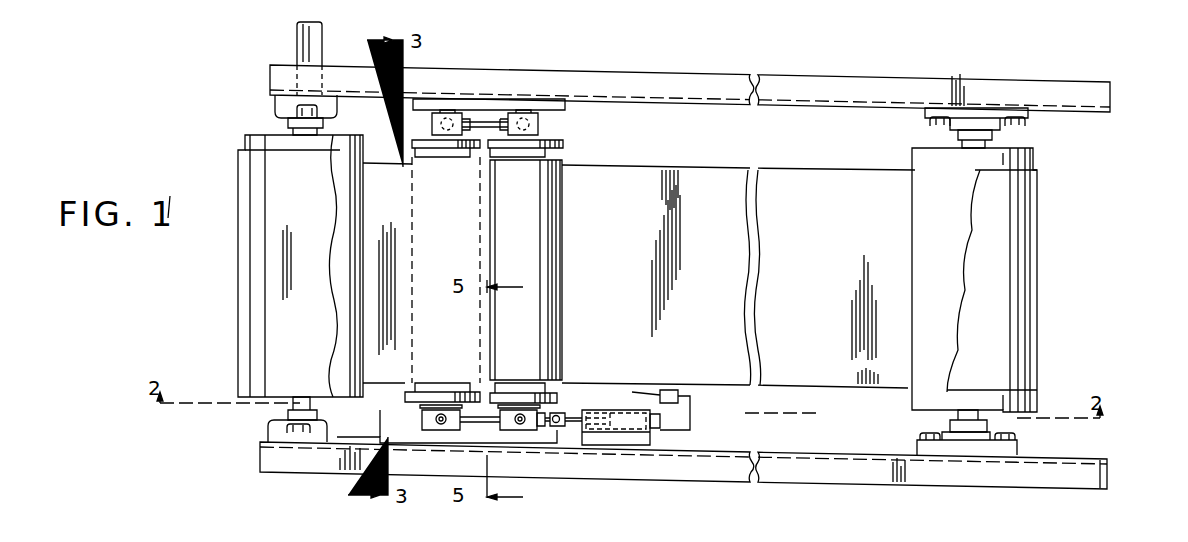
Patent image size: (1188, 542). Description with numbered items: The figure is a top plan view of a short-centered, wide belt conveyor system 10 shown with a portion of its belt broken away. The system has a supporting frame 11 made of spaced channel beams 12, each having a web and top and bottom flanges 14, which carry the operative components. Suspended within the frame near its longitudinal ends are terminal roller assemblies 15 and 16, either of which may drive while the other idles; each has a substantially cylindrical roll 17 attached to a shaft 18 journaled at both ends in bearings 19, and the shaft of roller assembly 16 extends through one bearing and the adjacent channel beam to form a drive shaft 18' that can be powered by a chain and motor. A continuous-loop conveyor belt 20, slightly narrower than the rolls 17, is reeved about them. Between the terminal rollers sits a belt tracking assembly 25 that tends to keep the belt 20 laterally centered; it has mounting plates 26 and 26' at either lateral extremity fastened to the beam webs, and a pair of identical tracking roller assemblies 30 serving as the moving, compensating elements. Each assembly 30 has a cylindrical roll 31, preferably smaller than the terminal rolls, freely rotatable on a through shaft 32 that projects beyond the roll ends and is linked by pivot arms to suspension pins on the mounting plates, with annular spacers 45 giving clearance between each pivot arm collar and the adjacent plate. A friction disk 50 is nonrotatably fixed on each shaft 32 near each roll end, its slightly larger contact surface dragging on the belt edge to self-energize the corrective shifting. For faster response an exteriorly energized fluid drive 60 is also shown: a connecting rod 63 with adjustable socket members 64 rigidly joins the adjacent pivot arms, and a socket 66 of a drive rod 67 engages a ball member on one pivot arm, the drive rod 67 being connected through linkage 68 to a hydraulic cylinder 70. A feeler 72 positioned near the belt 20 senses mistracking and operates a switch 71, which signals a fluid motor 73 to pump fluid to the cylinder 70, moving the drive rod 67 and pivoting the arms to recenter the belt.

The conveyor system 10 is at (1116, 470).
The supporting frame 11 is at (1077, 470).
The channel beams 12 is at (1012, 470).
The flanges 14 is at (809, 85).
The terminal roller assembly 15 is at (1044, 146).
The terminal roller assembly 16 is at (243, 130).
The cylindrical rolls 17 is at (255, 150).
The shafts 18 is at (640, 267).
The drive shaft 18' is at (327, 58).
The bearings 19 is at (330, 104).
The conveyor belt 20 is at (1030, 228).
The belt tracking assembly 25 is at (437, 478).
The mounting plate 26 is at (462, 466).
The mounting plate 26' is at (503, 74).
The tracking roller assemblies 30 is at (410, 176).
The cylindrical rolls 31 is at (558, 197).
The through shaft 32 is at (500, 395).
The annular spacers 45 is at (440, 112).
The friction disk 50 is at (422, 140).
The fluid drive 60 is at (609, 446).
The connecting rod 63 is at (462, 425).
The socket members 64 is at (487, 432).
The socket 66 is at (508, 432).
The drive rod 67 is at (526, 430).
The linkage 68 is at (560, 410).
The hydraulic cylinder 70 is at (610, 410).
The switch 71 is at (672, 390).
The feeler 72 is at (632, 392).
The fluid motor 73 is at (670, 429).